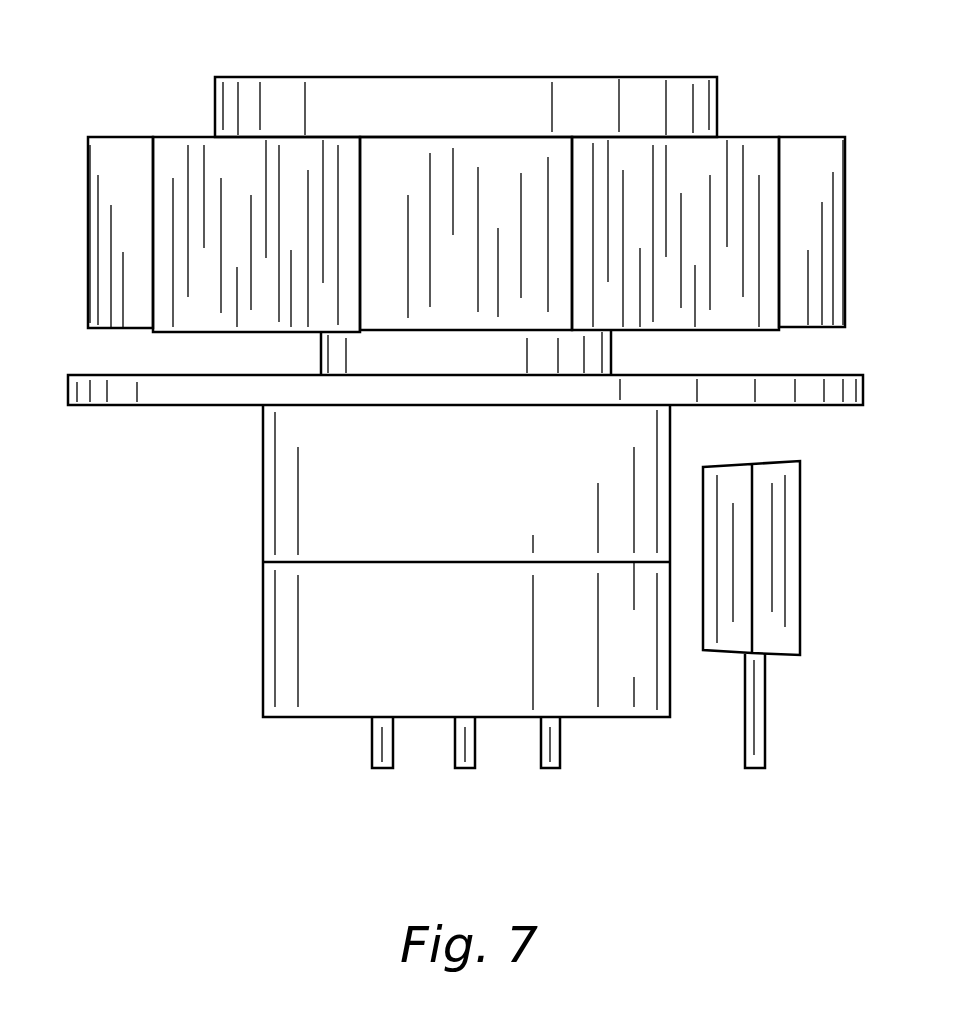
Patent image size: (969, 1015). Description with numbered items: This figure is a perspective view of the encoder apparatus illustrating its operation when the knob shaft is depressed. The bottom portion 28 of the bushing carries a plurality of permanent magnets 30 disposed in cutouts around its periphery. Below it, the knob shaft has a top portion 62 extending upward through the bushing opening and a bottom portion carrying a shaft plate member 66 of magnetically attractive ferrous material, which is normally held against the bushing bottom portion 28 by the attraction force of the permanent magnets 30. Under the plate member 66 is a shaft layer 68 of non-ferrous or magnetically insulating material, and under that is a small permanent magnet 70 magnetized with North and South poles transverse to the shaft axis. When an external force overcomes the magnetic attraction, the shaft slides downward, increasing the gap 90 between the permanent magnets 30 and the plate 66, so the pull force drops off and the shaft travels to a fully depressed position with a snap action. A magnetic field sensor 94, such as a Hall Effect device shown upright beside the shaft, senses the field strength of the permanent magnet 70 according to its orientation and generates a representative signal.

The bottom portion of the bushing 28 is at (720, 106).
The permanent magnets 30 is at (105, 232).
The top portion of the knob shaft 62 is at (463, 356).
The shaft plate member 66 is at (173, 400).
The shaft layer 68 is at (287, 477).
The small permanent magnet 70 is at (287, 619).
The gap 90 is at (848, 348).
The magnetic field sensors 94 is at (767, 585).